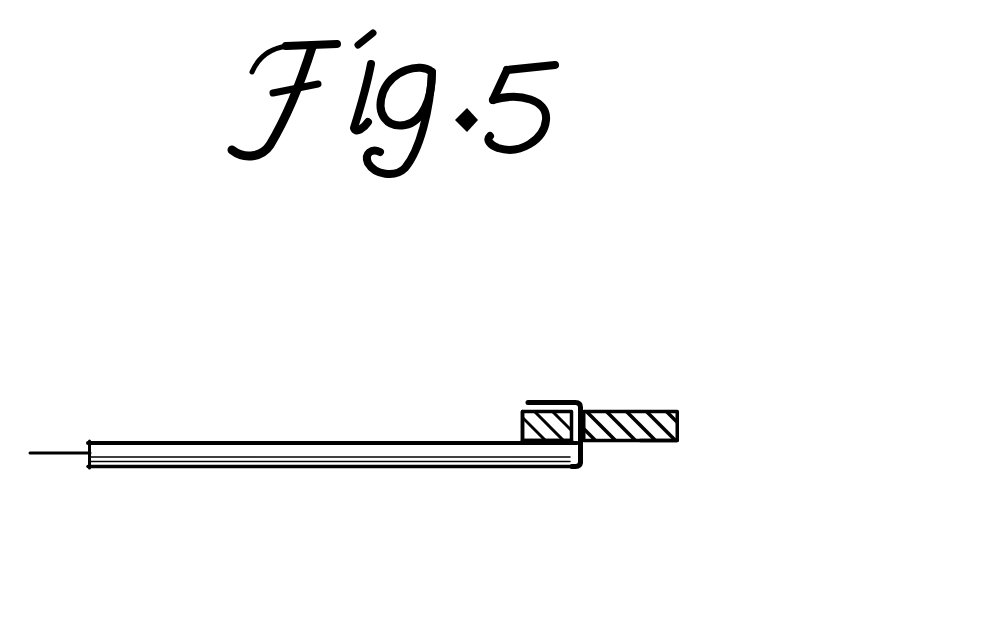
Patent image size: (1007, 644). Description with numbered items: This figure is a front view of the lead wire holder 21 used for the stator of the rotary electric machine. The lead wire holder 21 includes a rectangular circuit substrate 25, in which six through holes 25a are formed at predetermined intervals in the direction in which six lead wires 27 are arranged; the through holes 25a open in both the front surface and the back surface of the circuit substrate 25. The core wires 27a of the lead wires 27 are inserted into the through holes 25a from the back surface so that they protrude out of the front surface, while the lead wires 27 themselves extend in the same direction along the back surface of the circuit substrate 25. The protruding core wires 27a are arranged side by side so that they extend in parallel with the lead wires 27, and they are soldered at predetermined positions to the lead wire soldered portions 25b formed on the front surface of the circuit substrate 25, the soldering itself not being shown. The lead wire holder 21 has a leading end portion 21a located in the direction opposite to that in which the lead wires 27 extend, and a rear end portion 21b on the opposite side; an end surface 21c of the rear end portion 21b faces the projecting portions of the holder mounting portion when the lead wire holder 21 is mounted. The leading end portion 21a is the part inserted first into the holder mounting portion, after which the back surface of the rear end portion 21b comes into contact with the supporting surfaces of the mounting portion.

The lead wire holder 21 is at (692, 408).
The leading end portion 21a is at (650, 442).
The rear end portion 21b is at (535, 442).
The end surface 21c is at (520, 425).
The circuit substrate 25 is at (643, 409).
The through holes 25a is at (584, 452).
The lead wire soldered portions 25b is at (530, 401).
The lead wires 27 is at (275, 457).
The core wires 27a is at (582, 404).